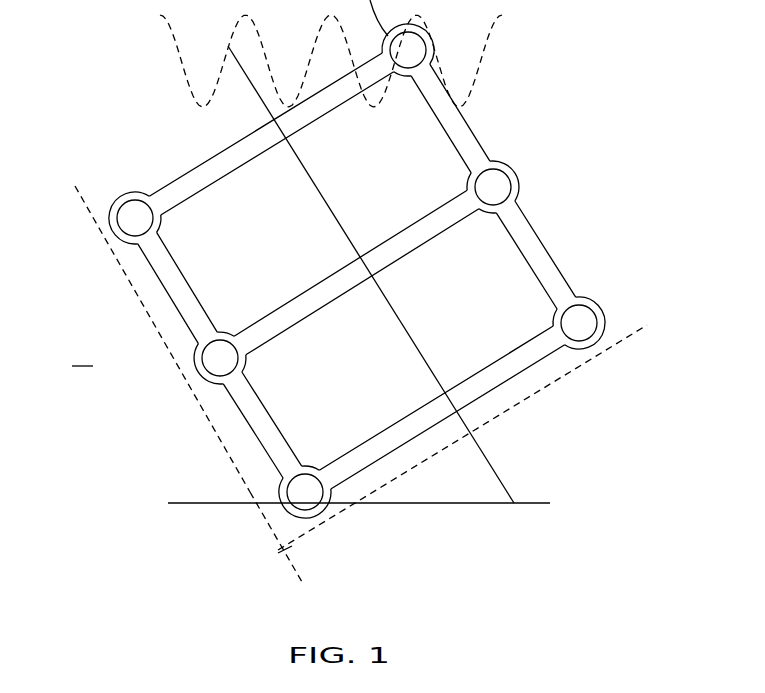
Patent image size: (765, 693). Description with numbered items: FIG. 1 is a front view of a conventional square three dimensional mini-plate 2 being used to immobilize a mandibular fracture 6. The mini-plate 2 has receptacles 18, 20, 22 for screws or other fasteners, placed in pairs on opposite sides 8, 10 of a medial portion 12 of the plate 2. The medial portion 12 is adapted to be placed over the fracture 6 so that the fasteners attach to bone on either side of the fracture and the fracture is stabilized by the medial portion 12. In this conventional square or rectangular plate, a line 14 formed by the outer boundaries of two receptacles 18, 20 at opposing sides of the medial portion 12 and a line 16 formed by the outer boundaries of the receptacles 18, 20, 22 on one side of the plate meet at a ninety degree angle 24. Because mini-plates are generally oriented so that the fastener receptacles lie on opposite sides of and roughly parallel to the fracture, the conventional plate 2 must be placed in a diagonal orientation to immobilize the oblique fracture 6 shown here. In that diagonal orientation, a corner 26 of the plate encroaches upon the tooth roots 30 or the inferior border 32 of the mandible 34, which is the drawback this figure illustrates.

The mini-plate 2 is at (178, 178).
The mandibular fracture 6 is at (482, 452).
The side of the plate 8 is at (472, 132).
The side of the plate 10 is at (180, 272).
The medial portion 12 is at (435, 232).
The line 14 is at (286, 553).
The line 16 is at (83, 208).
The receptacle 18 is at (312, 468).
The receptacle 20 is at (200, 365).
The receptacle 22 is at (130, 247).
The 90 degree angle 24 is at (290, 525).
The corner 26 is at (280, 503).
The tooth roots 30 is at (182, 77).
The inferior border 32 is at (412, 507).
The mandible 34 is at (85, 354).